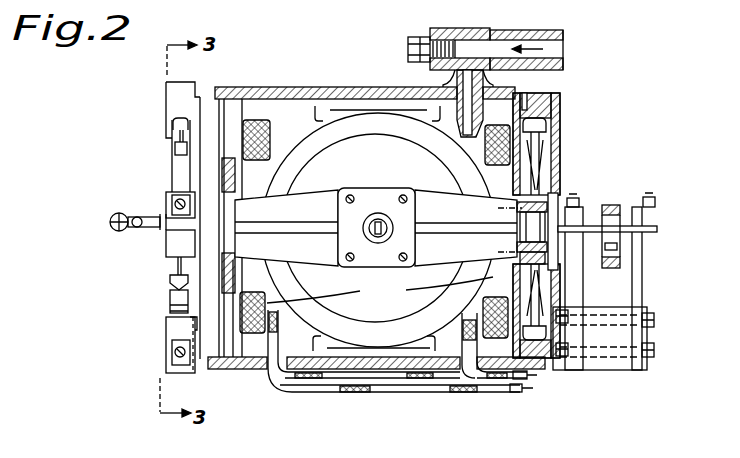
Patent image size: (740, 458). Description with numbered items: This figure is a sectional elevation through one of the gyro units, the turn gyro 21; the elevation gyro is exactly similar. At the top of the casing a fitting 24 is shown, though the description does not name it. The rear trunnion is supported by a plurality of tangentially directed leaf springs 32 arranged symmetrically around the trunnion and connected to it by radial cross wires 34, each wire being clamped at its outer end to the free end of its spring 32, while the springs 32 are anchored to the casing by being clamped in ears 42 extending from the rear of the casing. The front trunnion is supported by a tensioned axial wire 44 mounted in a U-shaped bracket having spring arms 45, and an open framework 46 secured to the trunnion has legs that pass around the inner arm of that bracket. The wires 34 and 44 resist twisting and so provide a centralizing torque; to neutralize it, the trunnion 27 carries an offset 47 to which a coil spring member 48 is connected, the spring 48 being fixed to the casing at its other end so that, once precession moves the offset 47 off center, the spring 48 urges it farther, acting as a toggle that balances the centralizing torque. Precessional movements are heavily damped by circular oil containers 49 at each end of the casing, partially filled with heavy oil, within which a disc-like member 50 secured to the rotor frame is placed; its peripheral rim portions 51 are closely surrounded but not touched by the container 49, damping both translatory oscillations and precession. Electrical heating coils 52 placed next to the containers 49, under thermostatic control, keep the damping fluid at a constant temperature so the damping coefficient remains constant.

The turn gyro 21 is at (358, 127).
The inlet conduit 24 is at (569, 51).
The trunnion 27 is at (158, 228).
The leaf springs 32 is at (180, 172).
The radial cross wires 34 is at (173, 265).
The ears 42 is at (176, 98).
The tensioned axial wire 44 is at (590, 226).
The spring arms 45 is at (636, 268).
The open framework 46 is at (610, 268).
The offset 47 is at (109, 228).
The coil spring member 48 is at (125, 212).
The circular oil containers 49 is at (573, 126).
The disc-like member 50 is at (553, 167).
The rim portions 51 is at (542, 342).
The electrical heating coils 52 is at (380, 290).